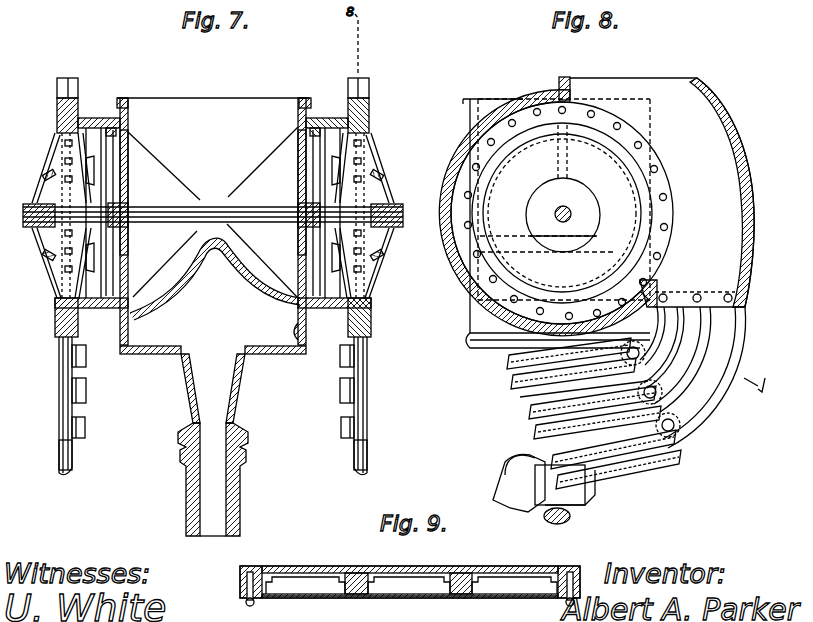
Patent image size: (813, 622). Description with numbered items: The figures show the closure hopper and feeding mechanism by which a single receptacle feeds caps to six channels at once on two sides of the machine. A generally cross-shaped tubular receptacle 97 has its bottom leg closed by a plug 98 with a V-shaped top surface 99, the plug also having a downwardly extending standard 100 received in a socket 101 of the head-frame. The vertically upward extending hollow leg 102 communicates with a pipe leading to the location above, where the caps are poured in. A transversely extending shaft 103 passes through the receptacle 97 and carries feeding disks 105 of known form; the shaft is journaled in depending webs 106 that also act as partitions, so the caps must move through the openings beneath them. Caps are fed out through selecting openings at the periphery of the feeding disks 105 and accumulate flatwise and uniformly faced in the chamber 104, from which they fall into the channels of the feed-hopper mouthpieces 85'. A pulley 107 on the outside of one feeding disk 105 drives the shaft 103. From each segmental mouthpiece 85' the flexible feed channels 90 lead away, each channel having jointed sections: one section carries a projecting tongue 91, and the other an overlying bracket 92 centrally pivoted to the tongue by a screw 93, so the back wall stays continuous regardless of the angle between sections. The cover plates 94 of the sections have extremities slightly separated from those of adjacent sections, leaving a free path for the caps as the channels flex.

In FIG. 7, the feed hopper outlet 85' is at (213, 406).
In FIG. 8, the feed hopper outlet 85' is at (705, 377).
In FIG. 7, the feed channel 90 is at (66, 465).
In FIG. 8, the feed channel 90 is at (594, 413).
In FIG. 9, the feed channel 90 is at (430, 568).
In FIG. 8, the projecting tongue 91 is at (640, 403).
In FIG. 7, the overlying bracket 92 is at (82, 418).
In FIG. 8, the overlying bracket 92 is at (658, 392).
In FIG. 7, the screw 93 is at (80, 386).
In FIG. 8, the screw 93 is at (672, 418).
In FIG. 9, the cover plate 94 is at (362, 596).
In FIG. 7, the cross-shaped tubular receptacle 97 is at (213, 221).
In FIG. 8, the cross-shaped tubular receptacle 97 is at (470, 322).
In FIG. 7, the plug 98 is at (213, 326).
In FIG. 8, the plug 98 is at (558, 340).
In FIG. 7, the V-shaped top surface 99 is at (215, 279).
In FIG. 8, the V-shaped top surface 99 is at (590, 228).
In FIG. 7, the standard 100 is at (236, 412).
In FIG. 8, the standard 100 is at (535, 393).
In FIG. 7, the socket 101 is at (238, 505).
In FIG. 8, the socket 101 is at (535, 483).
In FIG. 7, the hollow leg 102 is at (272, 95).
In FIG. 8, the hollow leg 102 is at (505, 100).
In FIG. 7, the shaft 103 is at (268, 202).
In FIG. 8, the shaft 103 is at (553, 213).
In FIG. 8, the chamber 104 is at (656, 192).
In FIG. 7, the feeding disk 105 is at (68, 165).
In FIG. 8, the feeding disk 105 is at (562, 213).
In FIG. 7, the depending web 106 is at (128, 240).
In FIG. 8, the depending web 106 is at (614, 252).
In FIG. 7, the pulley 107 is at (375, 122).